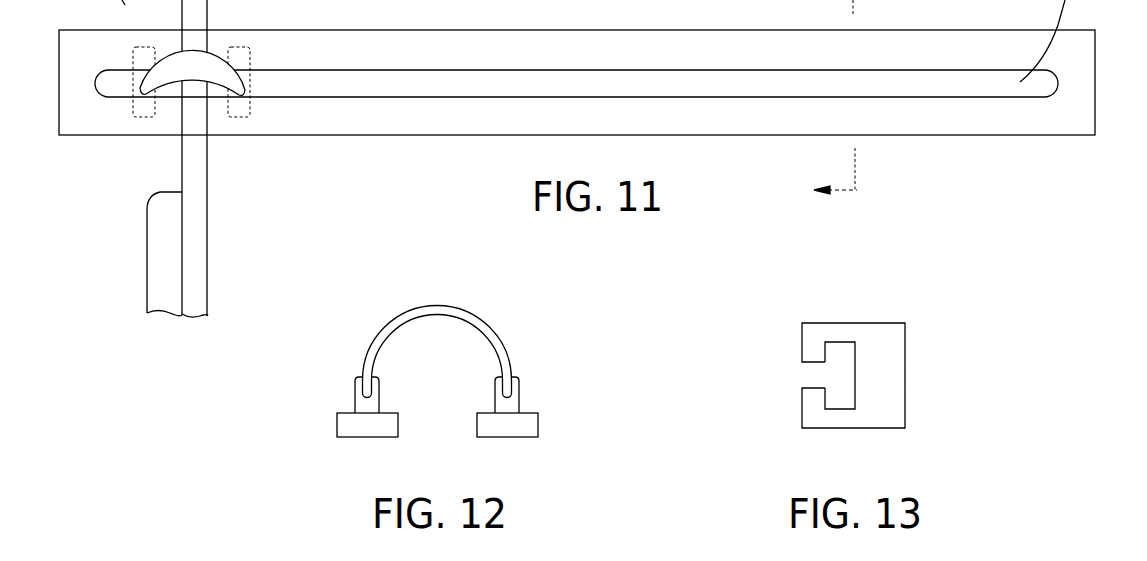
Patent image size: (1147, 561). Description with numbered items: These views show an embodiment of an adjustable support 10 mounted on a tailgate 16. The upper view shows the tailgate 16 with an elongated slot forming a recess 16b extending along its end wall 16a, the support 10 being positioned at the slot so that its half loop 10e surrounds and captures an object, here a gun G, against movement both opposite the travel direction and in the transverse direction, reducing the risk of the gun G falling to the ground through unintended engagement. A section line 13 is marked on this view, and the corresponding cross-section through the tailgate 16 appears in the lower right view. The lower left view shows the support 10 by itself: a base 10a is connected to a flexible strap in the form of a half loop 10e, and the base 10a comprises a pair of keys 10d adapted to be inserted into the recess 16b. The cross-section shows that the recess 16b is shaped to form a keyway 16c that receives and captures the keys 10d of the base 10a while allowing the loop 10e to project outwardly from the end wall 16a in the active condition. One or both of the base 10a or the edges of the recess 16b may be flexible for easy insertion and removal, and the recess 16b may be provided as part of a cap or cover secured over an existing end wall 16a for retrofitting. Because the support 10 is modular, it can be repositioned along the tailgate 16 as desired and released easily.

In FIG. 11, the tailgate 16 is at (1086, 56).
In FIG. 11, the gun G is at (200, 233).
In FIG. 11, the line 13- 13 is at (835, 114).
In FIG. 12, the support 10 is at (381, 358).
In FIG. 12, the half loop 10e is at (437, 306).
In FIG. 12, the base 10a is at (311, 418).
In FIG. 12, the keys 10d is at (367, 438).
In FIG. 13, the end wall 16a is at (802, 340).
In FIG. 13, the recess 16b is at (808, 376).
In FIG. 13, the keyway 16c is at (856, 379).